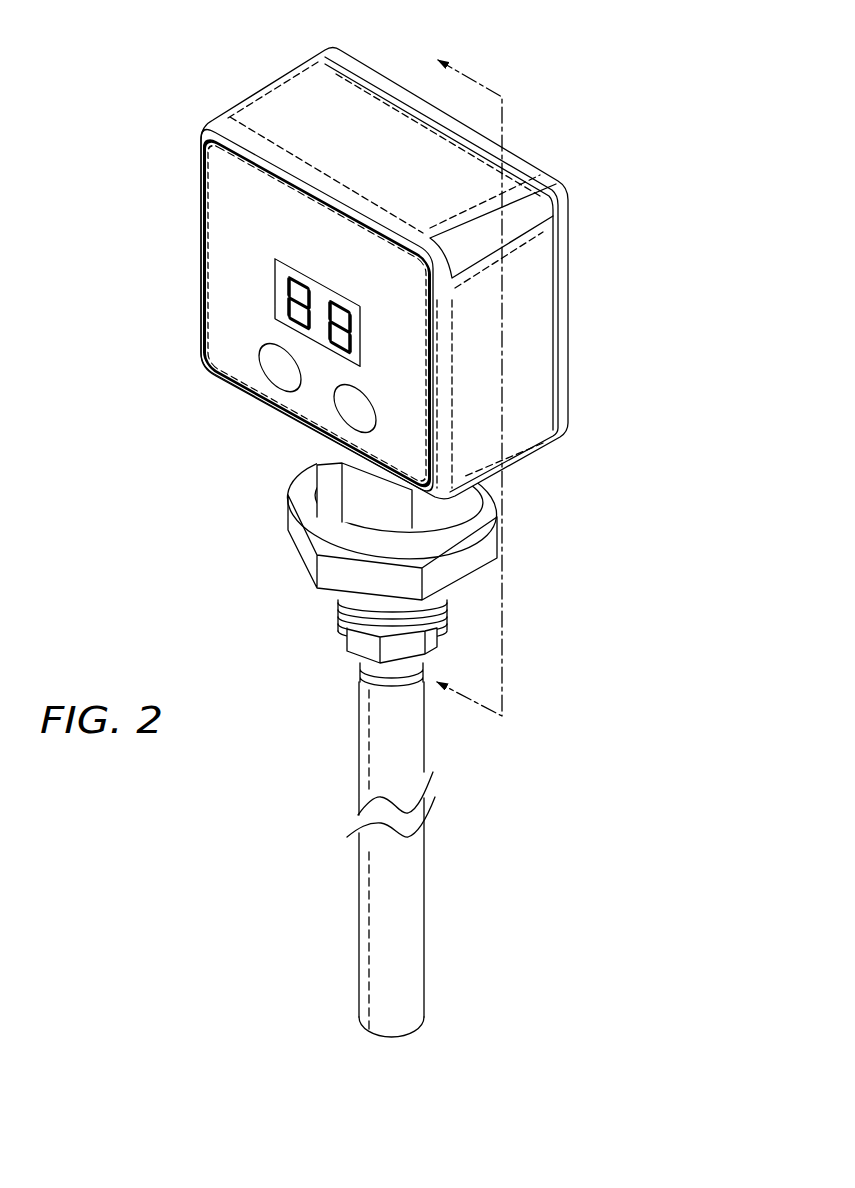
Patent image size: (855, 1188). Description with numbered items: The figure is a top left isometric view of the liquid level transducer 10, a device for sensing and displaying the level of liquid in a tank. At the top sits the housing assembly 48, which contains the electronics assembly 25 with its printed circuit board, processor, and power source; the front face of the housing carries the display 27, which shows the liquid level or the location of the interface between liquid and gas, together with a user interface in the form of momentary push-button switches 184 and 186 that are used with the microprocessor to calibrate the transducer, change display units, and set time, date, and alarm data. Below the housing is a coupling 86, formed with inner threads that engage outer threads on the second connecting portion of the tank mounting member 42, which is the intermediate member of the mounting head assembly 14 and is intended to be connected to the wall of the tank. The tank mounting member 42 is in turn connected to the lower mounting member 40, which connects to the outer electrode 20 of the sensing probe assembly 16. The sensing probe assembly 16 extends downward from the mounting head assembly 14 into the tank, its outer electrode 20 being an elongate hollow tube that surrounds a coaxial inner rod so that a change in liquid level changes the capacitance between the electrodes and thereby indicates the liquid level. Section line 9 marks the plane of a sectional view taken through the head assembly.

The liquid level transducer 10 is at (205, 80).
The housing assembly 48 is at (200, 250).
The electronics assembly 25 is at (230, 327).
The display 27 is at (280, 273).
The momentary push-button switch 184 is at (278, 366).
The momentary push-button switch 186 is at (350, 405).
The coupling 86 is at (320, 467).
The mounting head assembly 14 is at (293, 539).
The tank mounting member 42 is at (323, 597).
The lower mounting member 40 is at (347, 652).
The sensing probe assembly 16 is at (363, 775).
The outer electrode 20 is at (417, 917).
The section line 9 is at (484, 400).